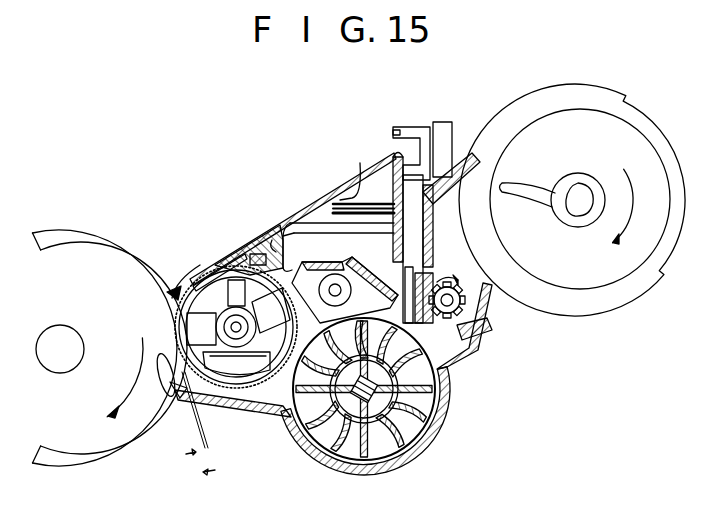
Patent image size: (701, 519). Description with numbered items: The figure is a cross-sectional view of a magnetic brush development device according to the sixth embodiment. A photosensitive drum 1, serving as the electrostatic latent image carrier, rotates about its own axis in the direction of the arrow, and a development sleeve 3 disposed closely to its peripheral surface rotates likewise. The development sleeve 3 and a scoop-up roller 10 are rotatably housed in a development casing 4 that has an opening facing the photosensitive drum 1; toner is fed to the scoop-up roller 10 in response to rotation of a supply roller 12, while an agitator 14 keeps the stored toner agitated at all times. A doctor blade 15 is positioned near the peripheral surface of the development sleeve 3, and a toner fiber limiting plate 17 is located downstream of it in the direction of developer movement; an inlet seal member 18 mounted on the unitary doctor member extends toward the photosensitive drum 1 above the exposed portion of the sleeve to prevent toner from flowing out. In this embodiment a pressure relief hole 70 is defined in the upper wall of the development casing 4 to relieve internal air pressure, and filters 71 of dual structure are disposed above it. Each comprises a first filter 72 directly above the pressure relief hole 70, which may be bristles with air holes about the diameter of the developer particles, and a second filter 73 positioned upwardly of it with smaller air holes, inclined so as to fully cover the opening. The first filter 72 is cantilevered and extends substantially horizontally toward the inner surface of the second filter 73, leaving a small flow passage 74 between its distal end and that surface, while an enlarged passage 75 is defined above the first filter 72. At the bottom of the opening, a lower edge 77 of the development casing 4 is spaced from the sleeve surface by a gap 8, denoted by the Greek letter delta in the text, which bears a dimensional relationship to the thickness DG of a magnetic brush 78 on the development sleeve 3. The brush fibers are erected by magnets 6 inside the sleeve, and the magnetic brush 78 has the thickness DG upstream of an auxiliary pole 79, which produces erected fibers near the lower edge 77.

The photosensitive drum 1 is at (125, 443).
The development sleeve 3 is at (260, 382).
The development casing 4 is at (398, 458).
The magnets 6 is at (223, 265).
The gap 8 is at (195, 426).
The scoop-up roller 10 is at (427, 407).
The supply roller 12 is at (472, 322).
The agitator 14 is at (530, 193).
The doctor blade 15 is at (280, 233).
The toner fiber limiting plate 17 is at (240, 253).
The inlet seal member 18 is at (187, 277).
The pressure relief hole 70 is at (310, 220).
The filters 71 is at (358, 162).
The first filter 72 is at (322, 213).
The second filter 73 is at (345, 198).
The small flow passage 74 is at (332, 205).
The enlarged passage 75 is at (376, 176).
The lower edge 77 is at (176, 372).
The magnetic brush 78 is at (172, 296).
The auxiliary pole 79 is at (247, 363).
The thickness of magnetic brush DG is at (208, 474).